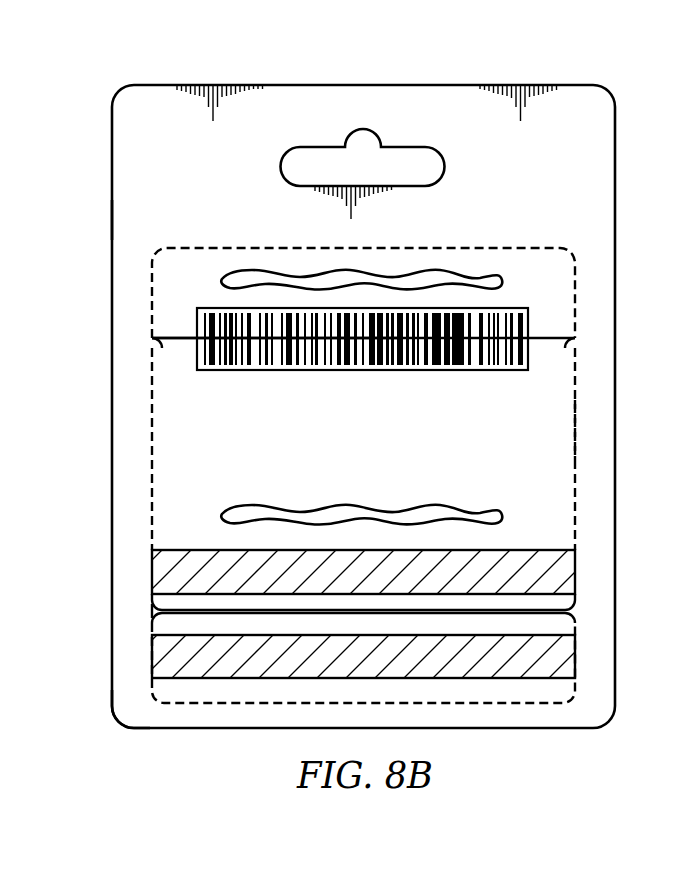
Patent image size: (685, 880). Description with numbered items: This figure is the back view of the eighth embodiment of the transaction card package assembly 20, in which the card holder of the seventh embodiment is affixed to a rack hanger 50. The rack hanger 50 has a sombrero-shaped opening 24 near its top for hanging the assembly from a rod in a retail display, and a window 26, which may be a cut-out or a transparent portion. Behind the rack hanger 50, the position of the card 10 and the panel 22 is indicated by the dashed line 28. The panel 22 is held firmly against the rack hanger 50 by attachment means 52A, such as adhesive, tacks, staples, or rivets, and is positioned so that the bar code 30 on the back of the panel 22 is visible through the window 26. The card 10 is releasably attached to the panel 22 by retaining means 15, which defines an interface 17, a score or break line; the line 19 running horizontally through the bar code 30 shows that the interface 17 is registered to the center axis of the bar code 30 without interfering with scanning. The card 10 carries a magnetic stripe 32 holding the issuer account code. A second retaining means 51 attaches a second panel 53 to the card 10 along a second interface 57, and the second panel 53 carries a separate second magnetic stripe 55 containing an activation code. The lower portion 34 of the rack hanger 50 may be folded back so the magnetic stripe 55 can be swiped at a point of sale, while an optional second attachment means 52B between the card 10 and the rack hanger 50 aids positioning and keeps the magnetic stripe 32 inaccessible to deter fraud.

The transaction card package assembly 20 is at (108, 46).
The opening 24 is at (361, 143).
The rack hanger 50 is at (124, 226).
The lower portion 34 is at (114, 718).
The panel 22 is at (475, 262).
The attachment means 52A is at (265, 272).
The interface 17 is at (374, 345).
The window 26 is at (366, 368).
The bar code 30 is at (448, 368).
The retaining means 15 is at (183, 340).
The line 19 is at (303, 345).
The dashed line 28 is at (577, 488).
The card 10 is at (577, 432).
The second attachment means 52B is at (468, 508).
The magnetic stripe 32 is at (577, 573).
The second panel 53 is at (150, 612).
The second interface 57 is at (278, 613).
The second retaining means 51 is at (448, 613).
The second magnetic stripe 55 is at (577, 660).